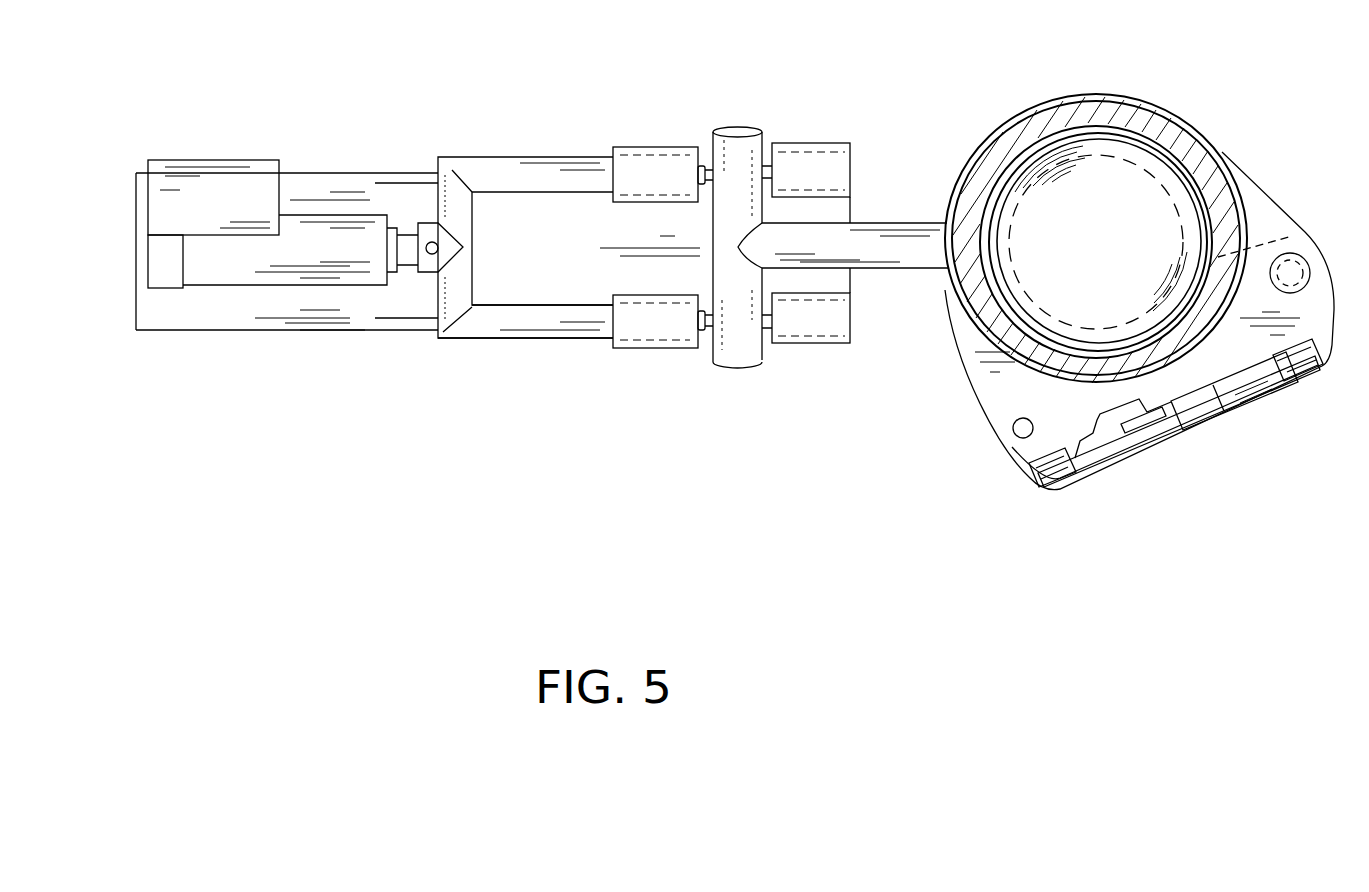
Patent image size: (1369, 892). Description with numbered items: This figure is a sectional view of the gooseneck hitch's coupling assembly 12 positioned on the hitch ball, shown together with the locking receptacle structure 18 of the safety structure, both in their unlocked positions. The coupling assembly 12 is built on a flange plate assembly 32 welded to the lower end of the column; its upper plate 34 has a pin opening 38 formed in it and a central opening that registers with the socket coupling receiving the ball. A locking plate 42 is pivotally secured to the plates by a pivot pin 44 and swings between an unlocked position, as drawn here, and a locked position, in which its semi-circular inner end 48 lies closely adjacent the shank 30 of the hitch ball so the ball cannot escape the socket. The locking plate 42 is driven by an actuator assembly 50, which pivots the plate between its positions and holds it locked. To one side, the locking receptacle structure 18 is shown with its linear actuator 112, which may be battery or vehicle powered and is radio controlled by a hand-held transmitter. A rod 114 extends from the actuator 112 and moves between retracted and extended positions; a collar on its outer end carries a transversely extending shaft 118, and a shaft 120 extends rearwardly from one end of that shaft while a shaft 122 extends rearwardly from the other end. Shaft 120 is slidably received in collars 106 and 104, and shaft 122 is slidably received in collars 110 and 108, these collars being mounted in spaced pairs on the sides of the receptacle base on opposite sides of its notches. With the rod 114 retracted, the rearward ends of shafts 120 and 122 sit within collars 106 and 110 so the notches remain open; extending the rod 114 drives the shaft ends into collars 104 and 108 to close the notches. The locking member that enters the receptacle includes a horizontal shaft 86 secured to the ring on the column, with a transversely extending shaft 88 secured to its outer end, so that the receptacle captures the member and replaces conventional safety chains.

The coupling assembly 12 is at (1337, 241).
The locking receptacle structure 18 is at (340, 145).
The shank 30 is at (1132, 103).
The flange plate assembly 32 is at (984, 385).
The upper plate 34 is at (995, 397).
The pin opening 38 is at (1020, 437).
The locking plate 42 is at (1103, 462).
The pivot pin 44 is at (1290, 262).
The semi-circular inner end 48 is at (1048, 198).
The actuator assembly 50 is at (1207, 427).
The shaft or rod 86 is at (912, 232).
The transversely extending shaft or rod 88 is at (752, 160).
The tube or collar 104 is at (814, 345).
The tube or collar 106 is at (648, 345).
The tube or collar 108 is at (818, 145).
The tube or collar 110 is at (653, 148).
The linear actuator 112 is at (322, 284).
The rod 114 is at (414, 226).
The transversely extending shaft or rod 118 is at (462, 276).
The shaft or rod 120 is at (553, 328).
The shaft or rod 122 is at (513, 165).